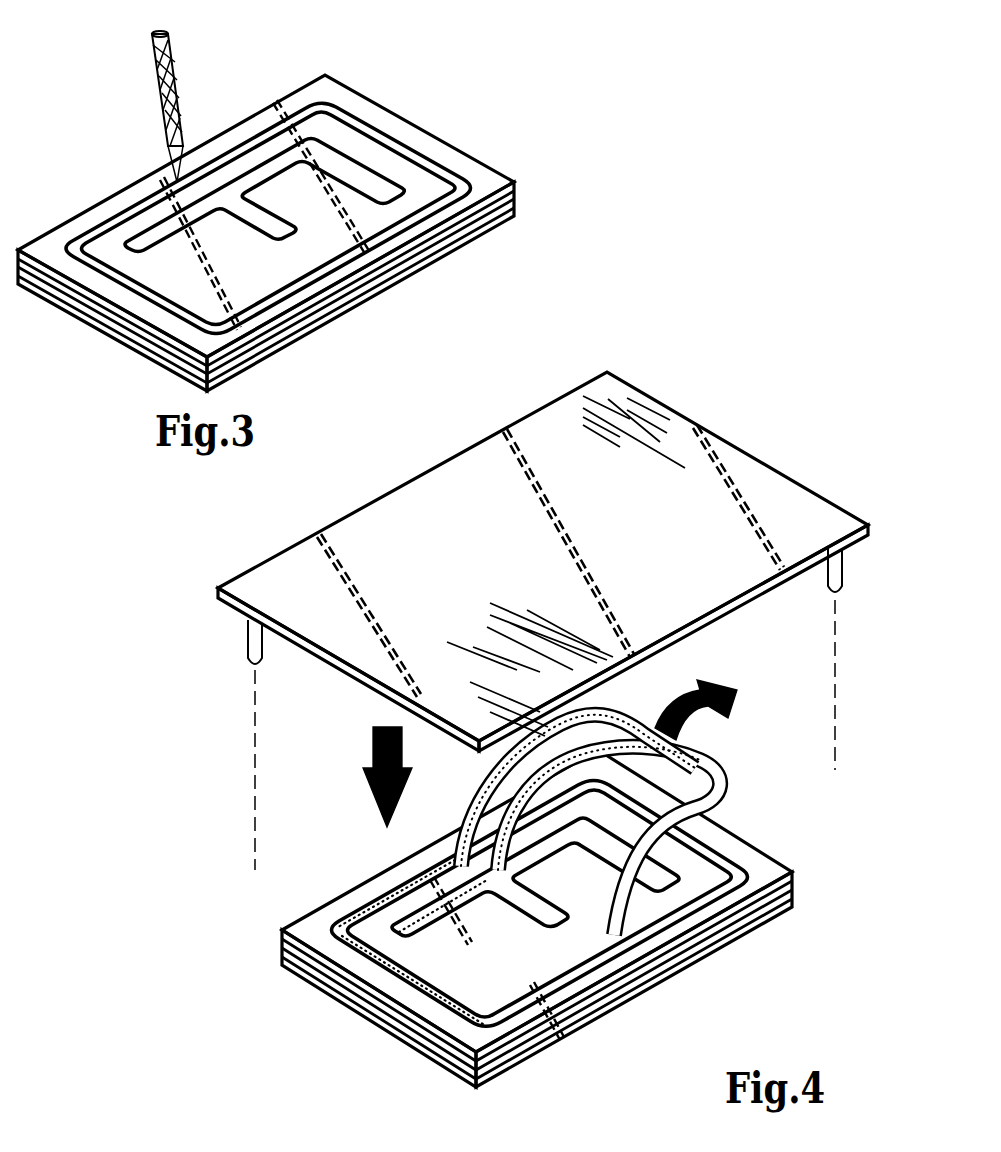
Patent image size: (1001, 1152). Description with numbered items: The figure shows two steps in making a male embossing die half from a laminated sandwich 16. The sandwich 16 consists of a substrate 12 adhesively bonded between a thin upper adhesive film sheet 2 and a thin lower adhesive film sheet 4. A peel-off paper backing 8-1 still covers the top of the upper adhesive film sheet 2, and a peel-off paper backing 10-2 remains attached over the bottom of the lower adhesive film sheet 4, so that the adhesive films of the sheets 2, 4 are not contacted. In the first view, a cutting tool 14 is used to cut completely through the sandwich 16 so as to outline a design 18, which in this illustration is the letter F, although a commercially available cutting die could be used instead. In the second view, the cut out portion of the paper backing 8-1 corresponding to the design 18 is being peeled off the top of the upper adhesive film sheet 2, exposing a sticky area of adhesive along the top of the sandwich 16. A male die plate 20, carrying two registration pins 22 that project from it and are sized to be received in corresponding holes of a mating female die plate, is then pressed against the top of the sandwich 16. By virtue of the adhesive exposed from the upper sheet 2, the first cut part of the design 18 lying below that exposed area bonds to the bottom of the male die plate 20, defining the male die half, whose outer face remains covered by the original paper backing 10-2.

In FIG. 3, the upper adhesive film sheet 2 is at (510, 185).
In FIG. 4, the upper adhesive film sheet 2 is at (792, 872).
In FIG. 3, the lower adhesive film sheet 4 is at (513, 220).
In FIG. 4, the lower adhesive film sheet 4 is at (793, 905).
In FIG. 3, the peel-off paper backing 8-1 is at (417, 143).
In FIG. 4, the peel-off paper backing 8-1 is at (520, 962).
In FIG. 3, the peel-off paper backing 10-2 is at (400, 275).
In FIG. 4, the peel-off paper backing 10-2 is at (677, 972).
In FIG. 3, the substrate 12 is at (513, 197).
In FIG. 4, the substrate 12 is at (795, 892).
In FIG. 3, the cutting tool 14 is at (172, 63).
In FIG. 3, the sandwich 16 is at (92, 180).
In FIG. 4, the sandwich 16 is at (322, 870).
In FIG. 3, the design 18 is at (282, 303).
In FIG. 4, the design 18 is at (447, 985).
In FIG. 4, the male die plate 20 is at (445, 493).
In FIG. 4, the registration pins 22 is at (845, 570).